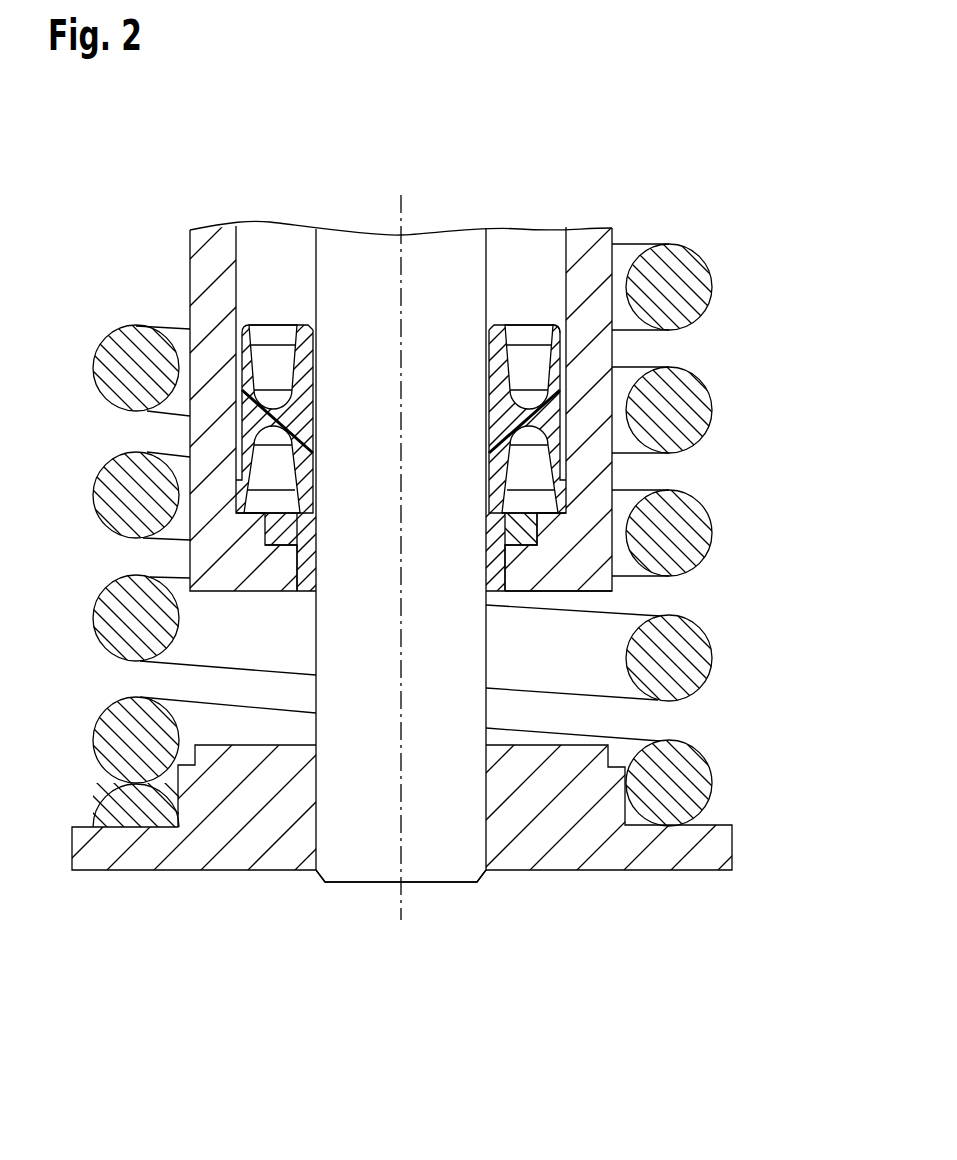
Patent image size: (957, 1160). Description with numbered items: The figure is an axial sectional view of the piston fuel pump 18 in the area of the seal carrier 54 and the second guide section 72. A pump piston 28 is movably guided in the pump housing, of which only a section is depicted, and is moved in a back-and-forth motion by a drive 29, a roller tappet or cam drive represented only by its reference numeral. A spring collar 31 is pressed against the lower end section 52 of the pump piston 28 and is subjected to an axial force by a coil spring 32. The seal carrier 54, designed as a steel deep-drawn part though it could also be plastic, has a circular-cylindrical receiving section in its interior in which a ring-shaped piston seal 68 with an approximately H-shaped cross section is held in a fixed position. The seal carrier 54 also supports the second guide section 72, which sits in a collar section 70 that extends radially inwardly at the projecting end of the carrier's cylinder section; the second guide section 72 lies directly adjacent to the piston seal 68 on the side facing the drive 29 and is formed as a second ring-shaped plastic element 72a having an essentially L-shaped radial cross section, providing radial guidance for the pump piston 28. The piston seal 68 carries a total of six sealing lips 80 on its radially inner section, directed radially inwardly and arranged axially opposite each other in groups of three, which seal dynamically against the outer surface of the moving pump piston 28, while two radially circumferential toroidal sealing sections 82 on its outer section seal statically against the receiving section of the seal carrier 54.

The piston fuel pump 18 is at (130, 225).
The pump piston 28 is at (440, 275).
The drive 29 is at (362, 962).
The spring collar 31 is at (553, 848).
The coil spring 32 is at (670, 662).
The lower end section 52 is at (443, 795).
The seal carrier 54 is at (590, 458).
The piston seal 68 is at (508, 422).
The collar section 70 is at (525, 575).
The second guide section 72 is at (543, 547).
The second plastic element 72a is at (285, 537).
The sealing lips 80 is at (489, 362).
The toroidal sealing sections 82 is at (563, 343).